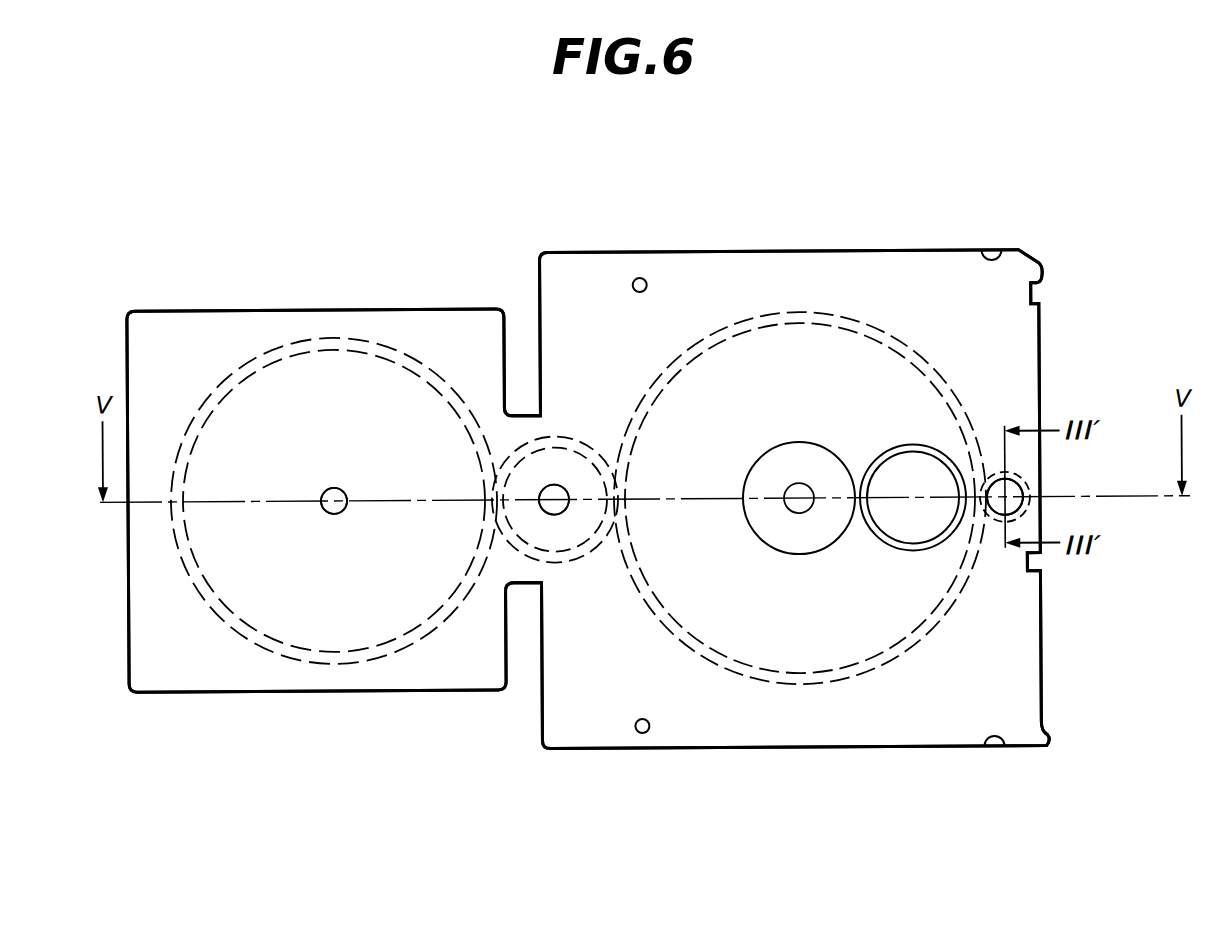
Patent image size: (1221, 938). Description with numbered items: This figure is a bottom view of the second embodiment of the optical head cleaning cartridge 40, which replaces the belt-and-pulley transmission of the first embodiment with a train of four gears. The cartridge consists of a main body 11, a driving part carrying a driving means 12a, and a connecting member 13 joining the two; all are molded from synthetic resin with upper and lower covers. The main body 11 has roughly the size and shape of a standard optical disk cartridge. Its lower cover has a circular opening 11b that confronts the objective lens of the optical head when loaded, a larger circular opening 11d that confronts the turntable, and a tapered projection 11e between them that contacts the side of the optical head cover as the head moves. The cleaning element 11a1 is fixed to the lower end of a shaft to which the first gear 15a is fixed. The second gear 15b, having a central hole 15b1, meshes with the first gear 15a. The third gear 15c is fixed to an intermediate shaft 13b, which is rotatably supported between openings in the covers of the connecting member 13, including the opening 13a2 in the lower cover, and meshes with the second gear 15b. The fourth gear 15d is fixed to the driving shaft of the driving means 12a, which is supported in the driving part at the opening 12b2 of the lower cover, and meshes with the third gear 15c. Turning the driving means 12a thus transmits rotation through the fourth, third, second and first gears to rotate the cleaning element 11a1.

The optical head cleaning cartridge 40 is at (610, 183).
The main body 11 is at (912, 226).
The cleaning element 11a1 is at (1013, 488).
The circular opening 11b is at (1016, 508).
The circular opening 11d is at (758, 528).
The projection 11e is at (904, 549).
The driving means 12a is at (334, 512).
The opening 12b2 is at (335, 490).
The connecting member 13 is at (529, 626).
The opening 13a2 is at (554, 515).
The intermediate shaft 13b is at (561, 486).
The first gear 15a is at (1003, 472).
The second gear 15b is at (892, 338).
The hole 15b1 is at (800, 514).
The third gear 15c is at (564, 436).
The fourth gear 15d is at (387, 339).